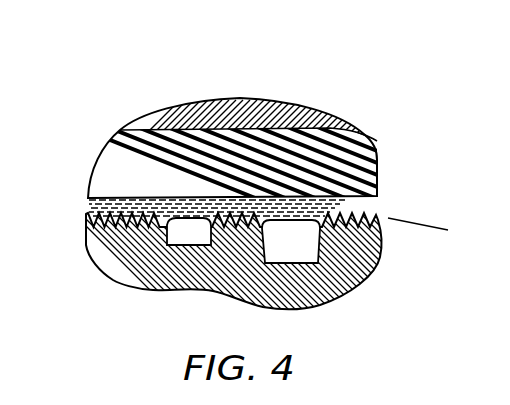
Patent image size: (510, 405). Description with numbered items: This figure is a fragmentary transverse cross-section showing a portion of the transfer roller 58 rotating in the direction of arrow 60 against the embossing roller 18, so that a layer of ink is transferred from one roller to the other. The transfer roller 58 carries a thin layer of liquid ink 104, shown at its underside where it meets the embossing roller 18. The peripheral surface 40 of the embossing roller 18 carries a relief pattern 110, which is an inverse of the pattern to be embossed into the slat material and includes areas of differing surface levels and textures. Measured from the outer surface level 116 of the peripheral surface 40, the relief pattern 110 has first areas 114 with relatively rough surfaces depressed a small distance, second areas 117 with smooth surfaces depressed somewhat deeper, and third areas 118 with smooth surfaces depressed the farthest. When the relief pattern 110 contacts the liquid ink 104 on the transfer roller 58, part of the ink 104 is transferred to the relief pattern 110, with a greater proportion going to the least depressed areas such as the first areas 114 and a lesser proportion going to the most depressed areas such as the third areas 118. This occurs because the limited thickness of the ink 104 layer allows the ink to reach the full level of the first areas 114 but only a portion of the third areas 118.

The arrow 60 is at (333, 52).
The transfer roller 58 is at (380, 163).
The embossing roller 18 is at (350, 289).
The liquid ink 104 is at (86, 206).
The first areas 114 is at (125, 205).
The second areas 117 is at (187, 245).
The third areas 118 is at (288, 262).
The relief pattern 110 is at (81, 217).
The peripheral surface 40 is at (378, 221).
The outer surface level 116 is at (420, 226).